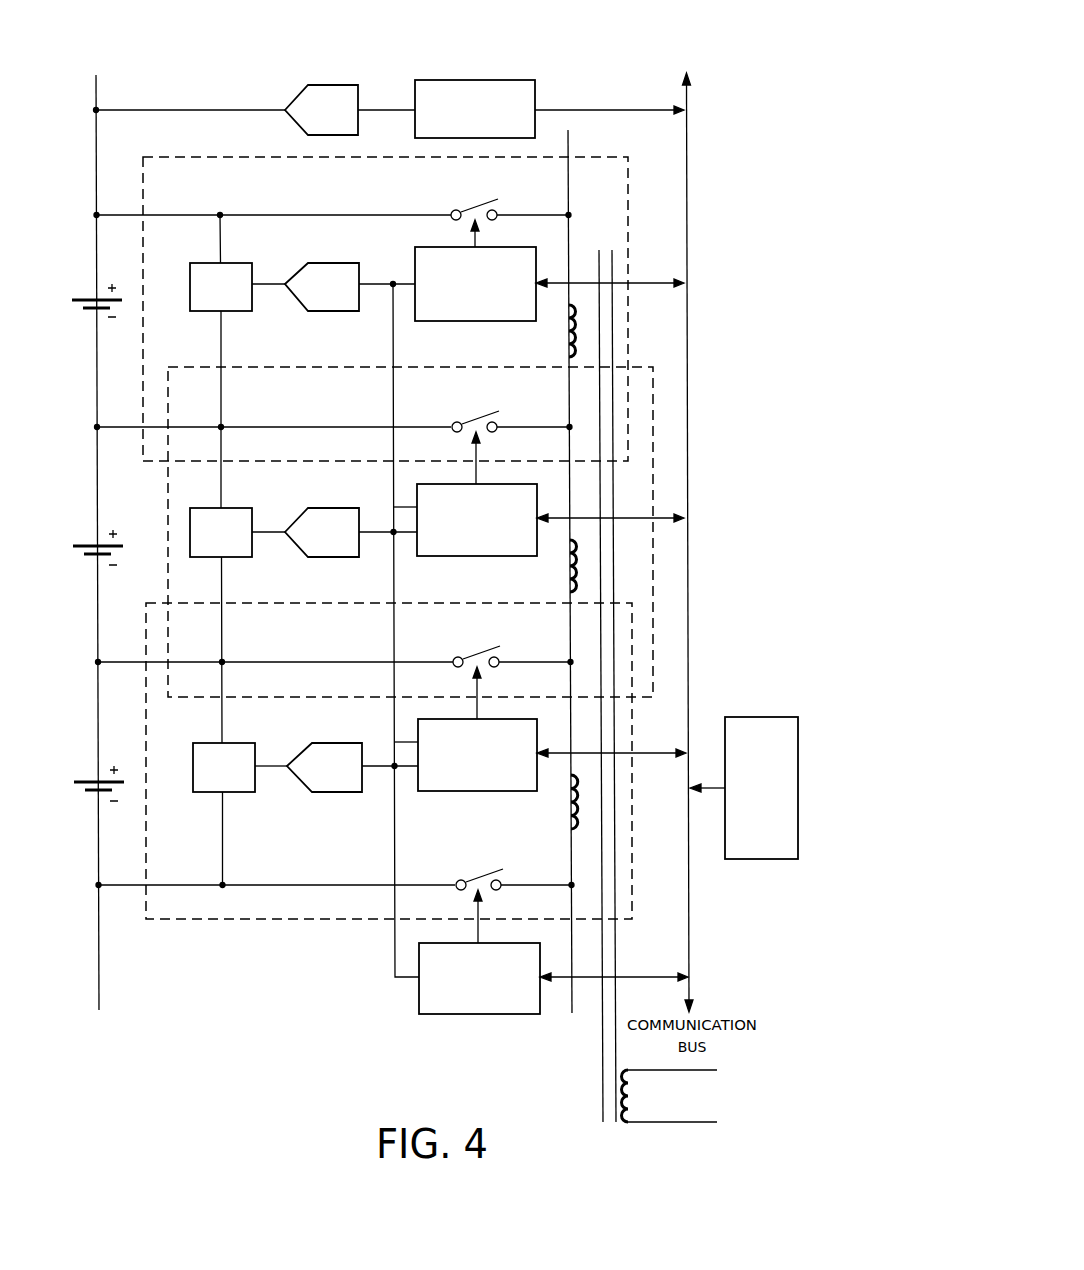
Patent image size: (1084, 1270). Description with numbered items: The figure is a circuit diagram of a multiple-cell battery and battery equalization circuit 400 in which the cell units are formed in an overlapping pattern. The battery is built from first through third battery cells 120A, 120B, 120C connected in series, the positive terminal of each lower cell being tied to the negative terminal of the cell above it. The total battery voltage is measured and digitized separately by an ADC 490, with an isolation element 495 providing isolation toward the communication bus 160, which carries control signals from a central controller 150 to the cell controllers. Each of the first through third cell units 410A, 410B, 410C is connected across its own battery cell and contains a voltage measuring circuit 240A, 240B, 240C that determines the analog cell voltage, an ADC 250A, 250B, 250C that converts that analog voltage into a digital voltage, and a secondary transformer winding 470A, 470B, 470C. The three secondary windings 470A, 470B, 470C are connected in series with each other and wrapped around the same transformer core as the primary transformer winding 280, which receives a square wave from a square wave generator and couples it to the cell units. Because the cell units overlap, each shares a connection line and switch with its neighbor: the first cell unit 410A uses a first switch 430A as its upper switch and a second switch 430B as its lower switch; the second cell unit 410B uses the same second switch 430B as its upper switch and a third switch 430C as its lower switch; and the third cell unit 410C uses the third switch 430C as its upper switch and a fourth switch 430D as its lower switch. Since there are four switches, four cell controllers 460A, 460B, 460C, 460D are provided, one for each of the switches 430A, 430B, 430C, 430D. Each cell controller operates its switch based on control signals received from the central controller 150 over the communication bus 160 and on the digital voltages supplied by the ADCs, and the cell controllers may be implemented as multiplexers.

The multiple-cell battery and battery equalization circuit 400 is at (709, 62).
The ADC 490 is at (325, 85).
The isolation element 495 is at (496, 80).
The communication bus 160 is at (687, 207).
The first cell unit 410A is at (180, 157).
The second cell unit 410B is at (168, 493).
The third cell unit 410C is at (204, 920).
The first battery cell 120A is at (83, 296).
The second battery cell 120B is at (84, 543).
The third battery cell 120C is at (85, 778).
The voltage measurement circuit 240A is at (240, 312).
The voltage measurement circuit 240B is at (240, 558).
The voltage measurement circuit 240C is at (243, 793).
The ADC 250A is at (338, 312).
The ADC 250B is at (338, 558).
The ADC 250C is at (341, 793).
The first switch 430A is at (476, 201).
The second switch 430B is at (478, 412).
The third switch 430C is at (480, 646).
The fourth switch 430D is at (481, 869).
The first cell controller 460A is at (457, 322).
The second cell controller 460B is at (459, 557).
The third cell controller 460C is at (462, 792).
The fourth cell controller 460D is at (459, 1015).
The first secondary transformer winding 470A is at (568, 344).
The second secondary transformer winding 470B is at (569, 579).
The third secondary transformer winding 470C is at (570, 814).
The central controller 150 is at (760, 717).
The primary transformer winding 280 is at (646, 1090).